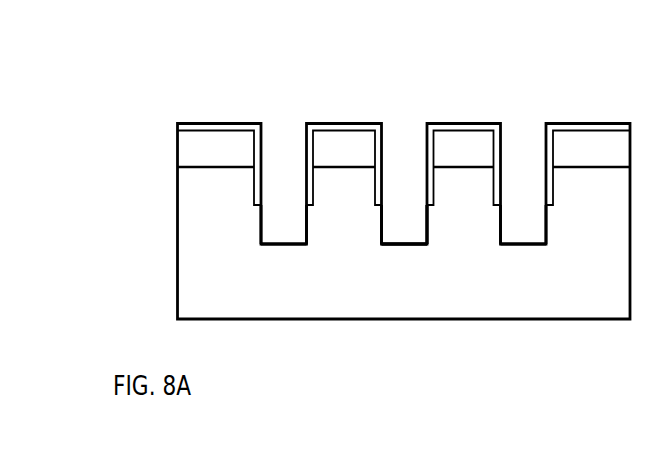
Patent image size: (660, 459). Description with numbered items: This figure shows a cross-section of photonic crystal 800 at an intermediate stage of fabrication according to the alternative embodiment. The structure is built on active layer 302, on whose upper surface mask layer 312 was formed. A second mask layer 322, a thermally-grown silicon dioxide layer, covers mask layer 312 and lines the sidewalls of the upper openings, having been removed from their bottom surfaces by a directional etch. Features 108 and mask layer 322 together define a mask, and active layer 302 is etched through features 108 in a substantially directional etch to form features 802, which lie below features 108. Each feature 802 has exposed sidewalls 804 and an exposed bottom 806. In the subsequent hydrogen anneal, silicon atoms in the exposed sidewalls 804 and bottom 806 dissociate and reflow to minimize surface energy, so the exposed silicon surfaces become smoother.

The photonic crystal 800 is at (171, 72).
The active layer 302 is at (221, 306).
The mask layer 312 is at (221, 160).
The mask layer 322 is at (382, 145).
The features 108 is at (301, 194).
The features 802 is at (301, 230).
The sidewalls 804 is at (380, 234).
The bottom 806 is at (402, 244).